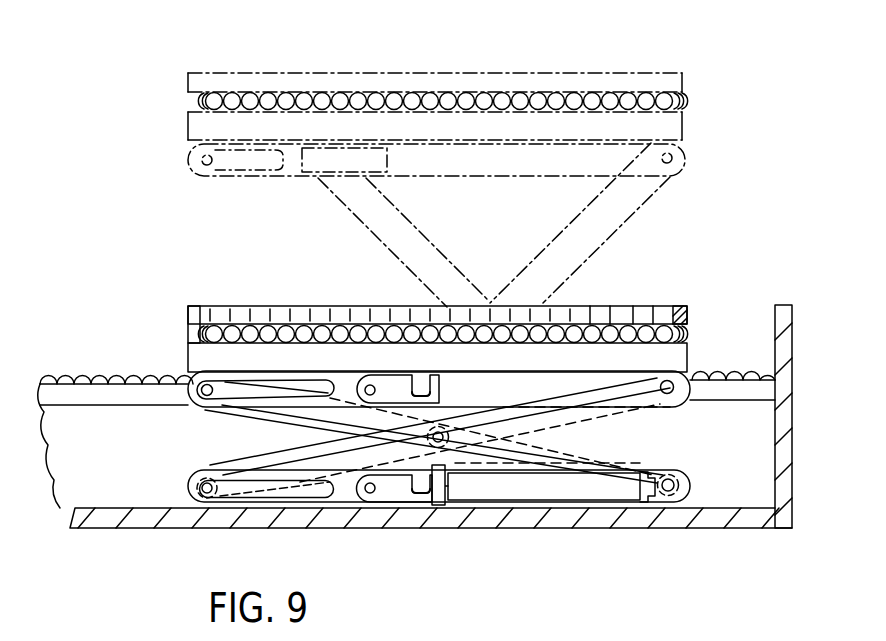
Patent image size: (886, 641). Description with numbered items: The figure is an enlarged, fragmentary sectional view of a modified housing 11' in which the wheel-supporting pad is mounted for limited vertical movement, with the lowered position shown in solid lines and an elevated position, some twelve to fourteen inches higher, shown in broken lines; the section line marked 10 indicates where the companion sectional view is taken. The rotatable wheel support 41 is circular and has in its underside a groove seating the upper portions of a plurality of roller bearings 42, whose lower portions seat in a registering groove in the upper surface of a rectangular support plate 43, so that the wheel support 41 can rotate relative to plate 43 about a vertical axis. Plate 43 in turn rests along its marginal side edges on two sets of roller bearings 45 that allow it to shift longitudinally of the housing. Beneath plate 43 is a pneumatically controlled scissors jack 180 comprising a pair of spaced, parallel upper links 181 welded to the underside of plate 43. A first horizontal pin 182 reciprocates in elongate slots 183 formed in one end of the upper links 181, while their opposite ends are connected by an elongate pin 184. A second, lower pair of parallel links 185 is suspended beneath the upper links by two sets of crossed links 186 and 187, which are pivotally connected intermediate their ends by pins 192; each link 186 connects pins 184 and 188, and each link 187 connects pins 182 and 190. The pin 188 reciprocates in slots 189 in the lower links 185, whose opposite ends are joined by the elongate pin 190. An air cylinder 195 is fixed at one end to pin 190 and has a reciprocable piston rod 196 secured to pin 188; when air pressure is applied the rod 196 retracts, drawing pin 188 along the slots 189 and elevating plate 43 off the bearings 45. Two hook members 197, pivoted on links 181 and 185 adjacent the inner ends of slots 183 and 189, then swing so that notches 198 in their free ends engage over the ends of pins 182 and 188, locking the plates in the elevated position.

The section line for FIG. 10 is at (433, 30).
The modified housing 11' is at (814, 393).
The rotatable wheel support 41 is at (188, 77).
The roller bearings 42 is at (200, 337).
The rectangular support plate 43 is at (188, 125).
The roller bearings 45 is at (48, 374).
The pneumatically controlled scissors jack 180 is at (175, 480).
The upper links 181 is at (196, 167).
The first horizontal pin 182 is at (200, 393).
The elongate slots 183 is at (250, 158).
The elongate pin 184 is at (675, 395).
The lower links 185 is at (340, 503).
The link 186 is at (603, 242).
The link 187 is at (378, 232).
The pin 188 is at (207, 500).
The slots 189 is at (259, 499).
The elongate pin 190 is at (680, 480).
The pins 192 is at (441, 430).
The air cylinder 195 is at (500, 492).
The piston rod 196 is at (441, 505).
The hook members 197 is at (400, 383).
The notches 198 is at (432, 378).